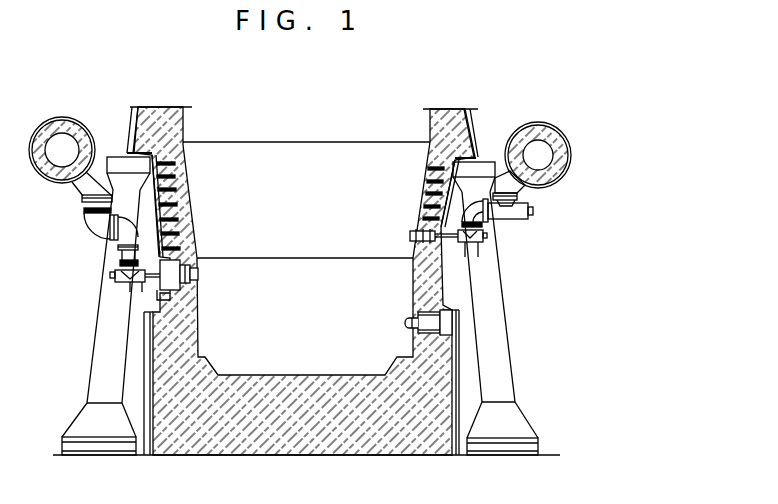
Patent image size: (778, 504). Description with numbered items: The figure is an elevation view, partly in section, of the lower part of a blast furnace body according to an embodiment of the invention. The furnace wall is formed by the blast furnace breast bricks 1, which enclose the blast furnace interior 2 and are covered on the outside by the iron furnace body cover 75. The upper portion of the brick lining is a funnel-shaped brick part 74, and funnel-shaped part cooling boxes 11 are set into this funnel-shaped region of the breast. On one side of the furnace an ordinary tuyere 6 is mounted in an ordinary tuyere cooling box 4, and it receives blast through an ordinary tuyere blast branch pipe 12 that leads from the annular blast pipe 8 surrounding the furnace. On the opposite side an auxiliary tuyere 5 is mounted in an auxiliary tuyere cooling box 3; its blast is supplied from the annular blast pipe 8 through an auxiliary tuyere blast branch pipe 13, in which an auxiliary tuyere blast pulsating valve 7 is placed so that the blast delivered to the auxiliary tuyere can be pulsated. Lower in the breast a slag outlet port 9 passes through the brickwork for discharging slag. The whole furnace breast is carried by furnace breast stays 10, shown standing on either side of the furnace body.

The blast furnace breast bricks 1 is at (466, 148).
The blast furnace interior 2 is at (295, 214).
The auxiliary tuyere cooling box 3 is at (410, 234).
The ordinary tuyere cooling box 4 is at (199, 270).
The auxiliary tuyere 5 is at (453, 243).
The ordinary tuyere 6 is at (151, 283).
The auxiliary tuyere blast pulsating valve 7 is at (514, 216).
The annular blast pipe 8 is at (56, 118).
The slag outlet port 9 is at (407, 320).
The furnace breast stays 10 is at (97, 347).
The funnel-shaped part cooling boxes 11 is at (185, 197).
The ordinary tuyere blast branch pipe 12 is at (83, 212).
The auxiliary tuyere blast branch pipe 13 is at (518, 198).
The funnel-shaped brick part 74 is at (176, 164).
The iron furnace body cover 75 is at (473, 132).